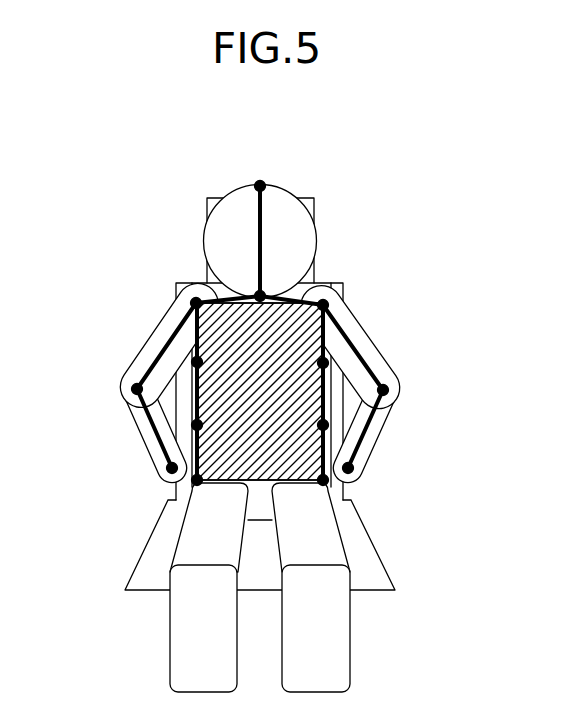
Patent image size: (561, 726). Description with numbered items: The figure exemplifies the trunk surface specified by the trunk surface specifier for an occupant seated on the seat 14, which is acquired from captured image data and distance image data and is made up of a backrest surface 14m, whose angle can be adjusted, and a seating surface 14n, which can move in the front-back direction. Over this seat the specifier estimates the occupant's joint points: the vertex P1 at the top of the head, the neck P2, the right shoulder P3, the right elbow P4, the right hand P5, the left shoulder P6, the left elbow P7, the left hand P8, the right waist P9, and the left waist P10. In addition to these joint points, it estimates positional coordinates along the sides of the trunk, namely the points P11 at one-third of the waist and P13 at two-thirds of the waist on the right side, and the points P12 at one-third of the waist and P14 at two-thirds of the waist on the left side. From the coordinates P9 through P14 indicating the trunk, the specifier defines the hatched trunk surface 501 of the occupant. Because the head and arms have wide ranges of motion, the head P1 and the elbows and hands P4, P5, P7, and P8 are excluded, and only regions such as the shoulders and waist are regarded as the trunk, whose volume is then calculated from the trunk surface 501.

The seat 14 is at (310, 197).
The backrest surface 14m is at (183, 285).
The seating surface 14n is at (145, 577).
The trunk surface 501 is at (312, 335).
The vertex P1 is at (261, 185).
The neck P2 is at (260, 295).
The right shoulder P3 is at (196, 303).
The right elbow P4 is at (137, 389).
The right hand P5 is at (172, 468).
The left shoulder P6 is at (323, 305).
The left elbow P7 is at (383, 390).
The left hand P8 is at (348, 468).
The right waist P9 is at (197, 483).
The left waist P10 is at (323, 482).
The positional coordinate at one-third of waist on right side P11 is at (197, 425).
The positional coordinate at one-third of waist on left side P12 is at (323, 425).
The positional coordinate at two-thirds of waist on right side P13 is at (197, 363).
The positional coordinate at two-thirds of waist on left side P14 is at (323, 363).